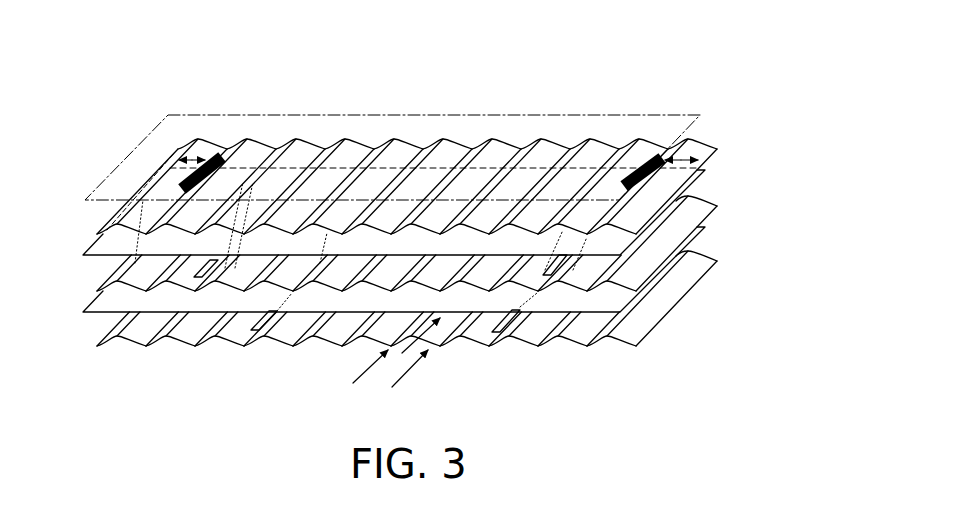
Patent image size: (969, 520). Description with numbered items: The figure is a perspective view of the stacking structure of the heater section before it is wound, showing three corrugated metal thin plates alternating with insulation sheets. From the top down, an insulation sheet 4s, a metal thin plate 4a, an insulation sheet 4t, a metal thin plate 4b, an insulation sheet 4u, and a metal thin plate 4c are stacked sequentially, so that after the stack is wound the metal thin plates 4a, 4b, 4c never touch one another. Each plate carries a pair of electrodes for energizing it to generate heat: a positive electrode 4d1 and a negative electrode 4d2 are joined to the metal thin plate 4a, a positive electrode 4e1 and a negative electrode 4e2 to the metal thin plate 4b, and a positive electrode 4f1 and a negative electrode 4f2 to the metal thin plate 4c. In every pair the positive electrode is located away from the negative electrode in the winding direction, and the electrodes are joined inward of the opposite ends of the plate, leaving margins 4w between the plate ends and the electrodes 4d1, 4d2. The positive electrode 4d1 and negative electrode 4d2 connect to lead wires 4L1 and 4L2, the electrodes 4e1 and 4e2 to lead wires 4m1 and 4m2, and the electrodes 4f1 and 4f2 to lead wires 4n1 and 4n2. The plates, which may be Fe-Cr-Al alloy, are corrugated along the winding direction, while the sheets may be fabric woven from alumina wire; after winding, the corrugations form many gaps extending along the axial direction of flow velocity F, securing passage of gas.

The metal thin plate 4a is at (423, 126).
The insulation sheet 4t is at (688, 188).
The metal thin plate 4b is at (430, 295).
The insulation sheet 4u is at (688, 242).
The metal thin plate 4c is at (436, 320).
The insulation sheet 4s is at (700, 114).
The positive electrode 4d1 is at (649, 153).
The negative electrode 4d2 is at (192, 178).
The margin 4w is at (180, 158).
The lead wire 4L1 is at (663, 158).
The lead wire 4L2 is at (222, 148).
The lead wire 4m1 is at (609, 150).
The lead wire 4m2 is at (268, 148).
The lead wire 4n1 is at (562, 150).
The lead wire 4n2 is at (356, 148).
The positive electrode 4e1 is at (560, 268).
The negative electrode 4e2 is at (200, 272).
The positive electrode 4f1 is at (512, 334).
The negative electrode 4f2 is at (270, 338).
The direction of flow velocity F is at (392, 363).